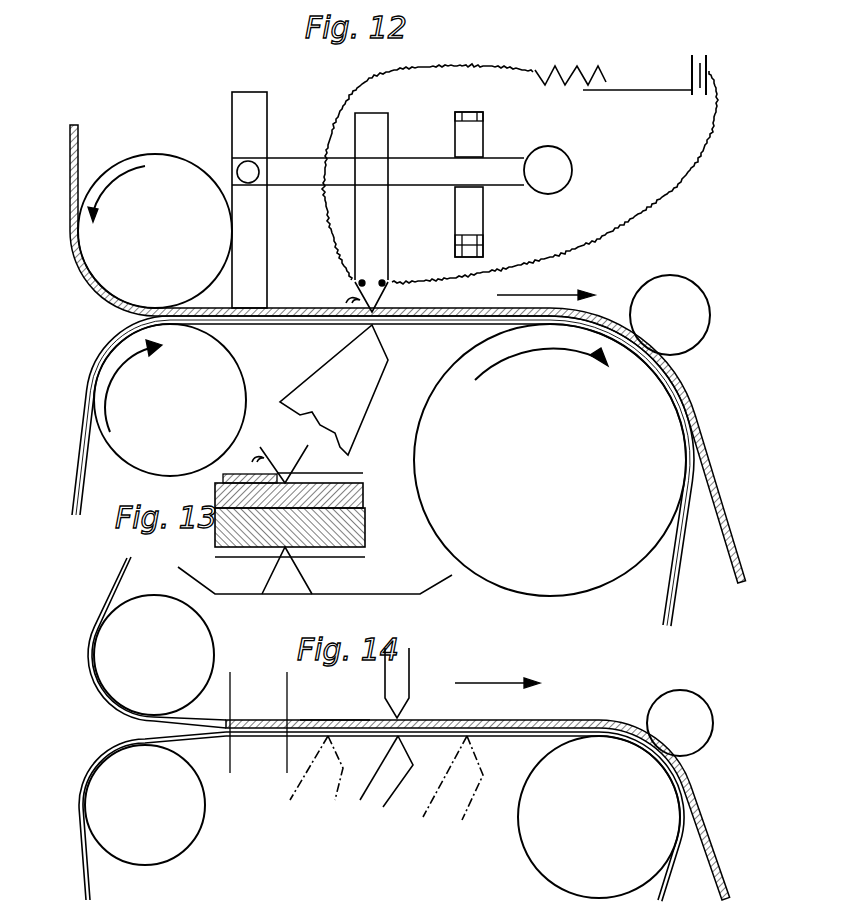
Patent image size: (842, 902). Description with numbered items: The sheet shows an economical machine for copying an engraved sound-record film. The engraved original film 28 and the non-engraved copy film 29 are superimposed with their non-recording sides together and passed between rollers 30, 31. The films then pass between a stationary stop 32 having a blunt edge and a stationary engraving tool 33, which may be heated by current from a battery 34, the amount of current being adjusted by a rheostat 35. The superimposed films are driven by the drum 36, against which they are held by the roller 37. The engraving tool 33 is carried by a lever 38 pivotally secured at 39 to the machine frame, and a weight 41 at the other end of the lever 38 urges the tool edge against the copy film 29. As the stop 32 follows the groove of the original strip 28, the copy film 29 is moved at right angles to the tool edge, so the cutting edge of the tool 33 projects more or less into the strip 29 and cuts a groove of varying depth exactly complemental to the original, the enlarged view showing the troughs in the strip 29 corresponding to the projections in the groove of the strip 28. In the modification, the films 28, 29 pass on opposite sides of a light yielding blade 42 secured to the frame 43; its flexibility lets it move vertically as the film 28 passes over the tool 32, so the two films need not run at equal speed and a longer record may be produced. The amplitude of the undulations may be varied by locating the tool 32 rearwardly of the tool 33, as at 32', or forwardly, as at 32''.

In FIG. 12, the engraved original film 28 is at (80, 452).
In FIG. 13, the engraved original film 28 is at (343, 535).
In FIG. 14, the engraved original film 28 is at (82, 806).
In FIG. 12, the copy film 29 is at (85, 285).
In FIG. 13, the copy film 29 is at (352, 498).
In FIG. 14, the copy film 29 is at (110, 705).
In FIG. 12, the roller 30 is at (153, 448).
In FIG. 14, the roller 30 is at (175, 835).
In FIG. 12, the roller 31 is at (153, 173).
In FIG. 14, the roller 31 is at (133, 612).
In FIG. 12, the stationary stop 32 is at (352, 390).
In FIG. 13, the stationary stop 32 is at (315, 570).
In FIG. 14, the stationary stop 32 is at (396, 771).
In FIG. 14, the rearward tool position 32' is at (329, 784).
In FIG. 14, the forward tool position 32'' is at (473, 778).
In FIG. 12, the stationary engraving tool 33 is at (378, 257).
In FIG. 13, the stationary engraving tool 33 is at (298, 450).
In FIG. 14, the stationary engraving tool 33 is at (405, 688).
In FIG. 12, the battery 34 is at (708, 63).
In FIG. 12, the rheostat 35 is at (567, 70).
In FIG. 12, the drum 36 is at (645, 460).
In FIG. 14, the drum 36 is at (662, 838).
In FIG. 12, the roller 37 is at (683, 343).
In FIG. 14, the roller 37 is at (697, 727).
In FIG. 12, the lever 38 is at (410, 172).
In FIG. 12, the pivot 39 is at (255, 168).
In FIG. 12, the weight 41 is at (550, 168).
In FIG. 14, the light yielding blade 42 is at (335, 718).
In FIG. 14, the frame 43 is at (272, 712).